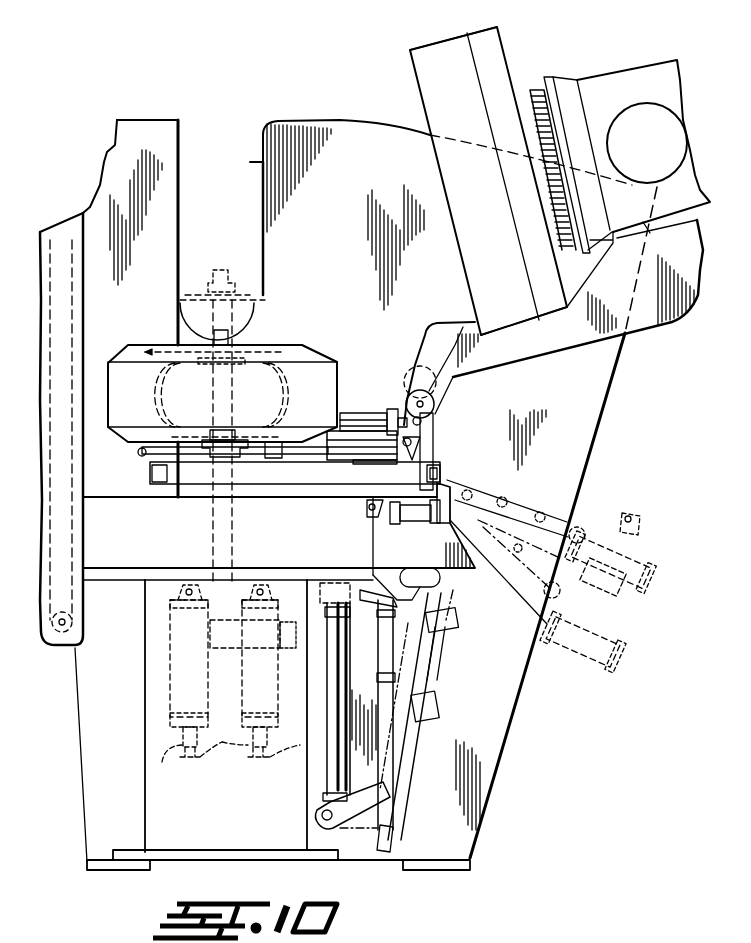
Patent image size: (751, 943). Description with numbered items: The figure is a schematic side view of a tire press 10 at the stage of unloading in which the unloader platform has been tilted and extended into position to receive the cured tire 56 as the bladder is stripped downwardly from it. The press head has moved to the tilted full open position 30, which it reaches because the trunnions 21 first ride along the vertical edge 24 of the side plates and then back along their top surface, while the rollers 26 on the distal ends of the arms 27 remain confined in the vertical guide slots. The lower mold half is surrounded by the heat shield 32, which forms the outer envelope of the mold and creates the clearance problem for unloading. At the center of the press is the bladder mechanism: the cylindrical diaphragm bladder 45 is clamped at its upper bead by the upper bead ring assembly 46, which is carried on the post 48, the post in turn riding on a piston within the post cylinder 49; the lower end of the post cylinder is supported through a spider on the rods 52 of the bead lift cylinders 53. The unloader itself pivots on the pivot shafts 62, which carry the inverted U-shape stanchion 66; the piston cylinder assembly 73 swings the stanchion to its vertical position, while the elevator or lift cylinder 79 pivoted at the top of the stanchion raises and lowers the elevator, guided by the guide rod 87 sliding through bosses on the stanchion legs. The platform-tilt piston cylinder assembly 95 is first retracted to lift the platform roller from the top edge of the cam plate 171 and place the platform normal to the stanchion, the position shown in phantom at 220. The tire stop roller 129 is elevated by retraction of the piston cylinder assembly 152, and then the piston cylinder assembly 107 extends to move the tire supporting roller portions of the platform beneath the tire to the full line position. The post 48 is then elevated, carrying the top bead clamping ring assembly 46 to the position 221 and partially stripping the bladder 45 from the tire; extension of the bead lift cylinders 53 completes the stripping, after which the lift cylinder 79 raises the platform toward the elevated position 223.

The tire press 10 is at (296, 78).
The tilted full open position 30 is at (405, 52).
The trunnions 21 is at (684, 112).
The vertical edge 24 is at (253, 163).
The upper bead ring assembly 46 is at (270, 293).
The elevated position of the top bead clamping ring assembly 221 is at (272, 300).
The bladder 45 is at (275, 333).
The post 48 is at (236, 395).
The cured tire 56 is at (340, 360).
The platform-tilt piston cylinder assembly 95 is at (352, 412).
The piston cylinder assembly 107 is at (368, 433).
The rollers 26 is at (436, 402).
The tire stop roller 129 is at (412, 442).
The arms 27 is at (540, 347).
The phantom line position of the platform 220 is at (565, 500).
The piston cylinder assembly 152 is at (392, 516).
The cam plate 171 is at (473, 570).
The elevated platform position 223 is at (148, 483).
The heat shield 32 is at (128, 572).
The bead lift cylinders 53 is at (170, 678).
The piston cylinder assembly 73 is at (253, 666).
The rods 52 is at (183, 747).
The post cylinder 49 is at (226, 742).
The elevator or lift cylinder 79 is at (330, 768).
The pivot shafts 62 is at (322, 815).
The stanchion 66 is at (367, 760).
The guide rod 87 is at (395, 694).